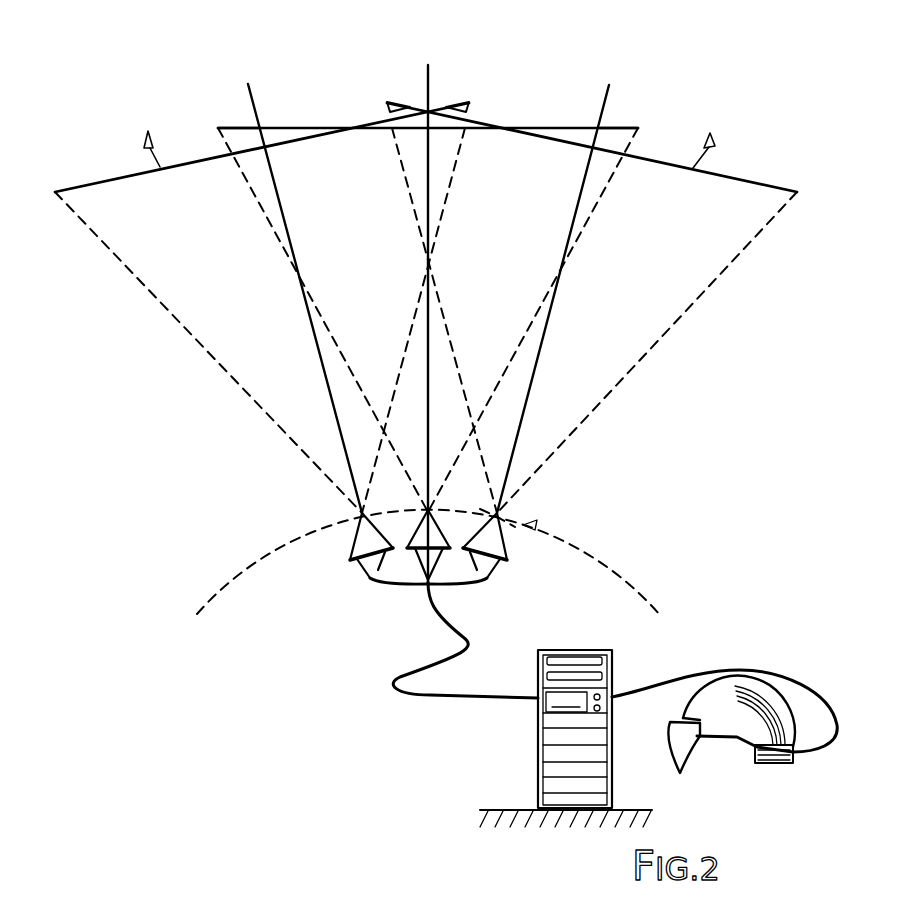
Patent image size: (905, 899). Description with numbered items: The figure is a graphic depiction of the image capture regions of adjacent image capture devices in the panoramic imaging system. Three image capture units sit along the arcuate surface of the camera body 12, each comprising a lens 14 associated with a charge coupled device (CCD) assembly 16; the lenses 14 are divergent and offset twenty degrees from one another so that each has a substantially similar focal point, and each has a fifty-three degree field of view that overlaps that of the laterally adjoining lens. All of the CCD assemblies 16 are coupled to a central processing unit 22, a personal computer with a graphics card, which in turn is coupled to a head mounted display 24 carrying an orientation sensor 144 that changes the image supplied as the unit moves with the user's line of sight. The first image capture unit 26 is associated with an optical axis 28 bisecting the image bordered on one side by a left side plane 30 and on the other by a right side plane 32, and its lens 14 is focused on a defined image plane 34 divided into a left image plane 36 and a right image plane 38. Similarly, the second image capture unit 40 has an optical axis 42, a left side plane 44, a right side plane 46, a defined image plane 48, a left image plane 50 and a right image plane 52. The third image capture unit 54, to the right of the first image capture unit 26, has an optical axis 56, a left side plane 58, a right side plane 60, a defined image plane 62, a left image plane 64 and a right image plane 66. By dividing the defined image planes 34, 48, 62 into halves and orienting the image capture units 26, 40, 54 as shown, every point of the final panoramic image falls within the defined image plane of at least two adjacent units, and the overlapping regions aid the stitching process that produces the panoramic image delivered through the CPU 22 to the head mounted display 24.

The body 12 is at (255, 562).
The lenses 14 is at (500, 512).
The charge coupled device (CCD) assembly 16 is at (479, 558).
The central processing unit 22 is at (553, 650).
The head mounted display 24 is at (719, 652).
The first image capture unit 26 is at (415, 550).
The optical axis 28 is at (428, 78).
The left side plane 30 is at (250, 193).
The right side plane 32 is at (605, 194).
The defined image plane 34 is at (547, 127).
The left image plane 36 is at (240, 127).
The right image plane 38 is at (620, 127).
The second image capture unit 40 is at (344, 574).
The optical axis 42 is at (249, 97).
The left side plane 44 is at (178, 302).
The right side plane 46 is at (416, 295).
The defined image plane 48 is at (148, 132).
The left image plane 50 is at (102, 181).
The right image plane 52 is at (449, 105).
The third image capture unit 54 is at (537, 526).
The optical axis 56 is at (608, 84).
The left side plane 58 is at (440, 295).
The right side plane 60 is at (700, 293).
The defined image plane 62 is at (711, 137).
The left image plane 64 is at (398, 106).
The right image plane 66 is at (770, 186).
The orientation sensor 144 is at (768, 763).